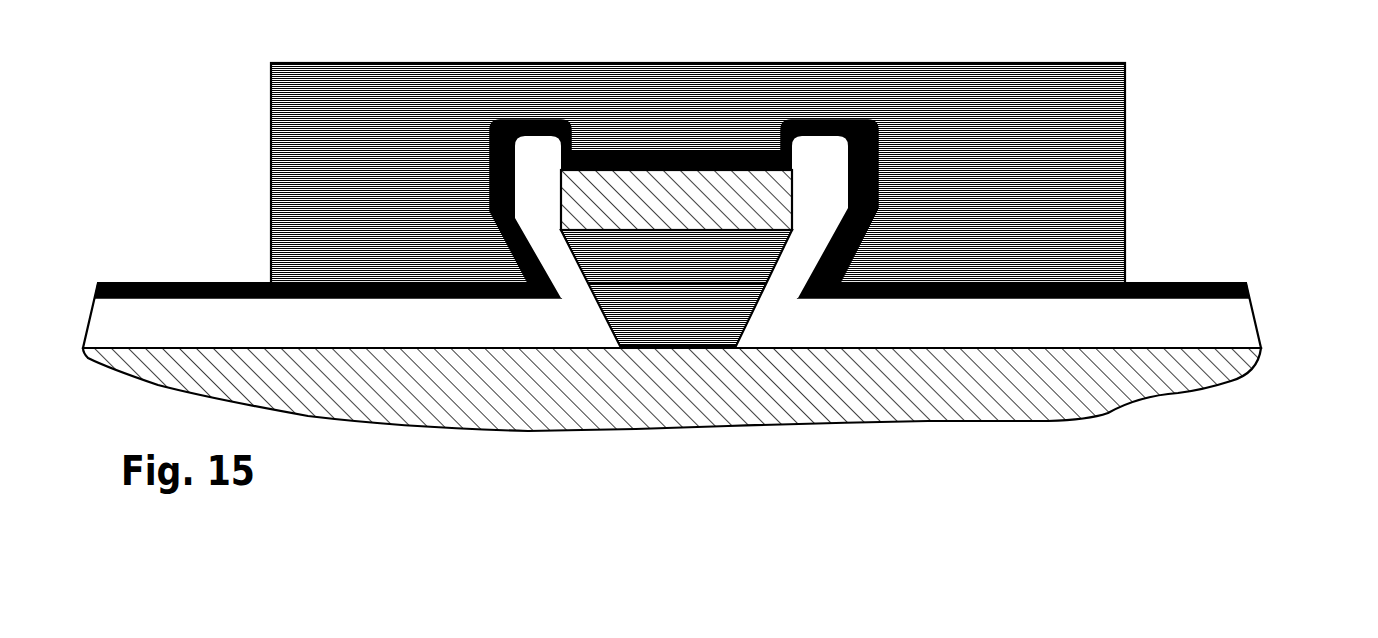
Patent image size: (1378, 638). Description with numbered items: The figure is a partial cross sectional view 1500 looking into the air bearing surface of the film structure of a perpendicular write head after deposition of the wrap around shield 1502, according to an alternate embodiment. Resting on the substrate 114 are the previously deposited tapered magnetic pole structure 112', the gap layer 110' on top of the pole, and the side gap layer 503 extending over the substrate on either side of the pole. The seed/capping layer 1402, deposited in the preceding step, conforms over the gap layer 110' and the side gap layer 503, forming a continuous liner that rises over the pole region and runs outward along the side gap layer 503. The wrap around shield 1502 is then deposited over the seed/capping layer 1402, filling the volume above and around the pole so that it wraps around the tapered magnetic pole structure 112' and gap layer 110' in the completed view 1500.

The partial cross sectional view 1500 is at (1188, 145).
The wrap around shield 1502 is at (405, 183).
The seed/capping layer 1402 is at (872, 167).
The gap layer 110' is at (676, 200).
The tapered magnetic pole structure 112' is at (676, 288).
The substrate 114 is at (618, 405).
The side gap layer 503 is at (1220, 328).